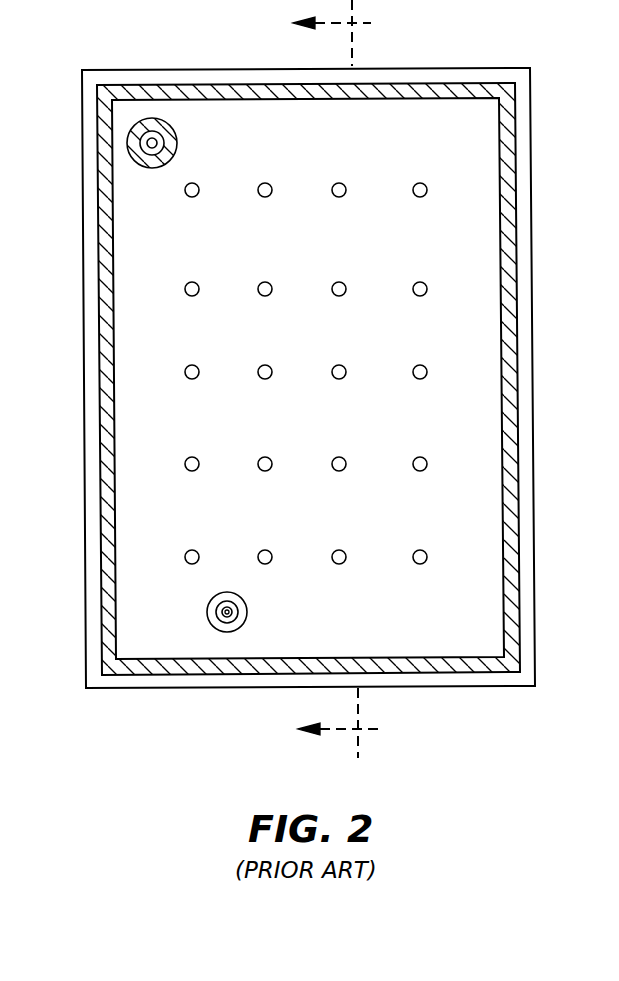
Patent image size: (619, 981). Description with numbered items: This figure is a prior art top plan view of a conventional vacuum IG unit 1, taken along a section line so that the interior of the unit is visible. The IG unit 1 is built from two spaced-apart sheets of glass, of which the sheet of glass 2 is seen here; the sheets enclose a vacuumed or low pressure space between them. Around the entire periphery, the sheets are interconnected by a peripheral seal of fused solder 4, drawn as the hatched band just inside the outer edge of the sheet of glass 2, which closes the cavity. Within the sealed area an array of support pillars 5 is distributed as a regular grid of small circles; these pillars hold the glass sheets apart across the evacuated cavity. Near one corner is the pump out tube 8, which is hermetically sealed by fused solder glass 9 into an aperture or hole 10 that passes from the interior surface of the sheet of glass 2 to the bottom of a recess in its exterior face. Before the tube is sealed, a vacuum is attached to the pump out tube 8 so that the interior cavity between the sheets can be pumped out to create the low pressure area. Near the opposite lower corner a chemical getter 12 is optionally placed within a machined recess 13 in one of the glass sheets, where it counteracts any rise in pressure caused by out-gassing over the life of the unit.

The IG unit 1 is at (304, 390).
The sheet of glass 2 is at (318, 76).
The peripheral seal of fused solder 4 is at (192, 86).
The support pillars 5 is at (427, 287).
The pump out tube 8 is at (99, 198).
The fused solder glass 9 is at (152, 170).
The aperture or hole 10 is at (150, 143).
The chemical getter 12 is at (224, 663).
The machined recess 13 is at (248, 612).